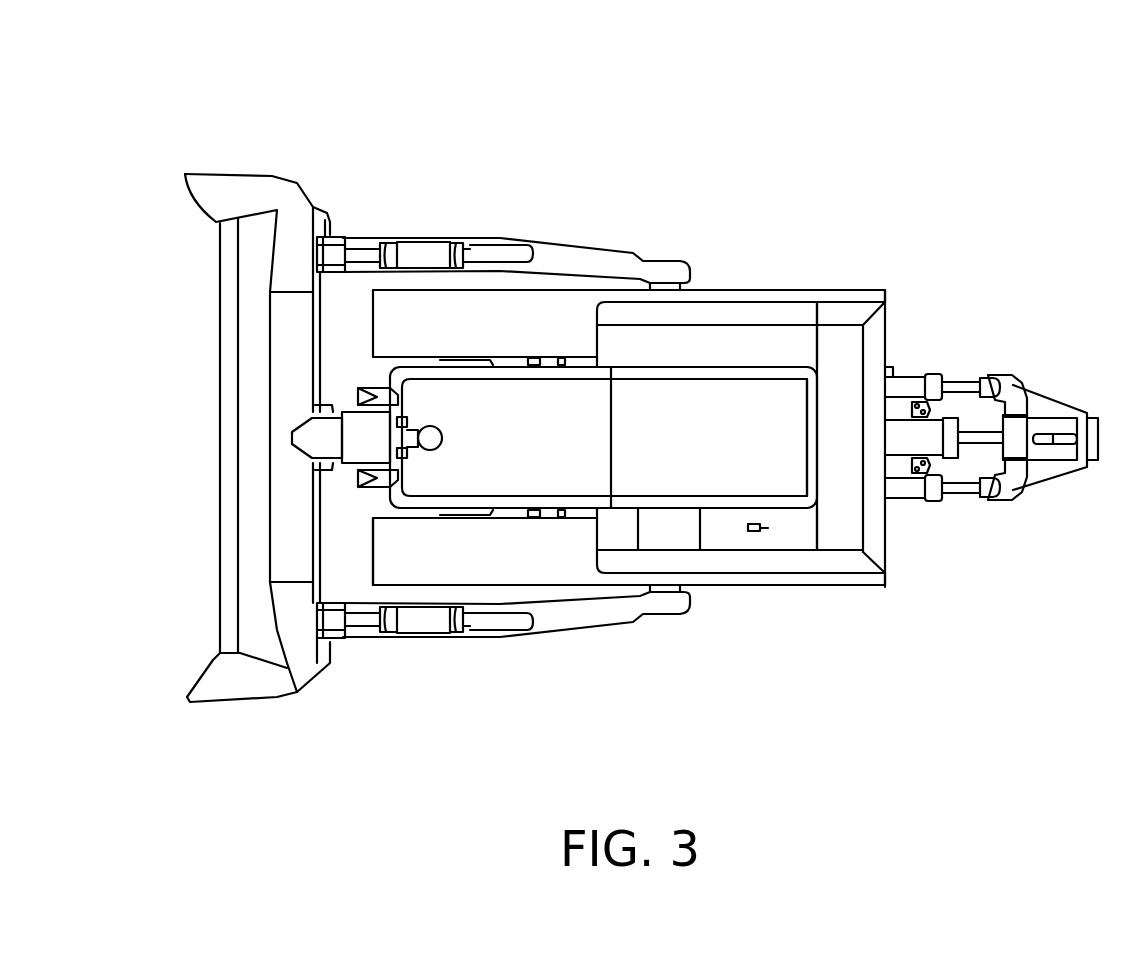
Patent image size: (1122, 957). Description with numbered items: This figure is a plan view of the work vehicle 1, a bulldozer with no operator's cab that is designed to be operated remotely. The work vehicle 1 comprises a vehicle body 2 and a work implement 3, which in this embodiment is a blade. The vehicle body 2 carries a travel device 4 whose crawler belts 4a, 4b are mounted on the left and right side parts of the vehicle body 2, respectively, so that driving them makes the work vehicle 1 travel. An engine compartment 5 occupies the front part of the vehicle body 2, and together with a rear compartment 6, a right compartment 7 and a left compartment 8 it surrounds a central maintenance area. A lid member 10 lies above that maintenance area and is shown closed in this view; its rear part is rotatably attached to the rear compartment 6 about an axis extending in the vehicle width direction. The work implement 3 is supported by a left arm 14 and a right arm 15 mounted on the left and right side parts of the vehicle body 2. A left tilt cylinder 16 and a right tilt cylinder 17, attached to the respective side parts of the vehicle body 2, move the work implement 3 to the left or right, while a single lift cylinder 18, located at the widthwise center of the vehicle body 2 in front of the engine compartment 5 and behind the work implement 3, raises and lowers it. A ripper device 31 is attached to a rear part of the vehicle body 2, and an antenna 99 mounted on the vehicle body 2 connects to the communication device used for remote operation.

The work vehicle 1 is at (393, 110).
The vehicle body 2 is at (853, 280).
The work implement 3 is at (253, 325).
The travel device 4 is at (435, 586).
The crawler belt 4a is at (500, 570).
The crawler belt 4b is at (467, 310).
The engine compartment 5 is at (556, 400).
The rear compartment 6 is at (850, 357).
The right compartment 7 is at (787, 347).
The left compartment 8 is at (790, 536).
The lid member 10 is at (697, 412).
The left arm 14 is at (613, 615).
The right arm 15 is at (603, 262).
The left tilt cylinder 16 is at (407, 630).
The right tilt cylinder 17 is at (388, 262).
The lift cylinder 18 is at (426, 434).
The ripper device 31 is at (967, 380).
The antenna 99 is at (752, 533).